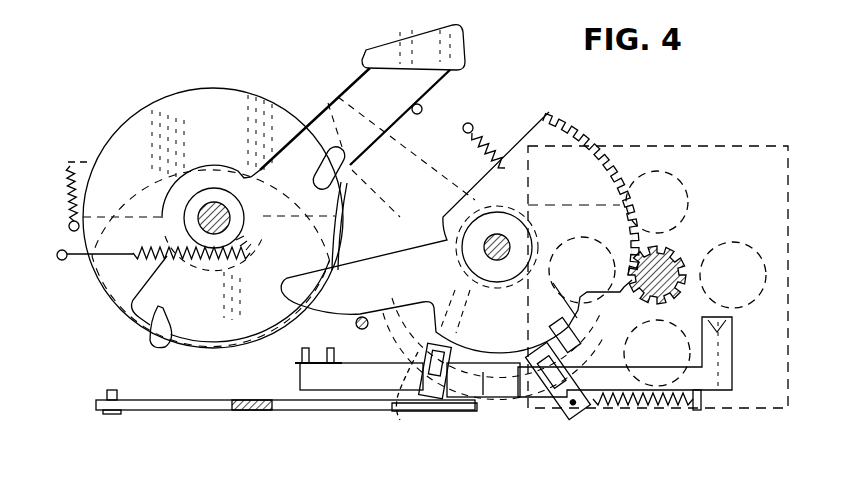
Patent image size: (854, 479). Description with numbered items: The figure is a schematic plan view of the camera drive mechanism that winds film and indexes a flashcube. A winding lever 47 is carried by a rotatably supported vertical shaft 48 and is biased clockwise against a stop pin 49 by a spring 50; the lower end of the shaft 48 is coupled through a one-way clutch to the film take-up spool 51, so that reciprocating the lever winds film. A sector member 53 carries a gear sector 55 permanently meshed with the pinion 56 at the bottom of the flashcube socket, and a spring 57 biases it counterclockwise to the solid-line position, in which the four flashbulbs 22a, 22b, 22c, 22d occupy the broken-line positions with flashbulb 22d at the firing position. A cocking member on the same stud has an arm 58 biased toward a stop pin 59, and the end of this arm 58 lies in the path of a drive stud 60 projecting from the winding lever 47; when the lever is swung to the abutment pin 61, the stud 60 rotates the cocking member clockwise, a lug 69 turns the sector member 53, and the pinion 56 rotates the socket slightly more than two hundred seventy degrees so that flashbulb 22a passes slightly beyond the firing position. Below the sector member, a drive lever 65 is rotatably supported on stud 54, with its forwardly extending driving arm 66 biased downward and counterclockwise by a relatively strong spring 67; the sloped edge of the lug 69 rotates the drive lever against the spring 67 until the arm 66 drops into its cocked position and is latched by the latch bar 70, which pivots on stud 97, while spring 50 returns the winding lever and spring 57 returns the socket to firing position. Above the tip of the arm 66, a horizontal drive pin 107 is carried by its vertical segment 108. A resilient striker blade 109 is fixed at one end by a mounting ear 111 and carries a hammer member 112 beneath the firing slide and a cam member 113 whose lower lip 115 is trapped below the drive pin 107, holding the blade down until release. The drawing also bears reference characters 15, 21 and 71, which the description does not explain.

The push button 15 is at (465, 45).
The indicator housing 21 is at (755, 146).
The flashbulb 22a is at (730, 242).
The indicator window 22b is at (690, 195).
The indicator window 22c is at (578, 240).
The flashbulb 22d is at (676, 358).
The winding lever 47 is at (355, 80).
The vertical shaft 48 is at (260, 203).
The stop pin 49 is at (423, 107).
The spring 50 is at (100, 253).
The film take-up spool 51 is at (110, 282).
The sector member 53 is at (548, 118).
The stud 54 is at (484, 250).
The gear sector 55 is at (617, 155).
The pinion 56 is at (675, 262).
The spring 57 is at (495, 140).
The arm 58 is at (341, 242).
The stop pin 59 is at (356, 323).
The drive stud 60 is at (316, 172).
The abutment pin 61 is at (68, 226).
The drive lever 65 is at (490, 332).
The driving arm 66 is at (436, 402).
The spring 67 is at (650, 405).
The lug 69 is at (580, 300).
The latch bar 70 is at (275, 411).
The bracket 71 is at (733, 335).
The stud 97 is at (110, 415).
The drive pin 107 is at (423, 372).
The vertical segment 108 is at (430, 352).
The striker blade 109 is at (348, 392).
The mounting ear 111 is at (300, 374).
The hammer member 112 is at (720, 400).
The cam member 113 is at (483, 400).
The lower lip 115 is at (410, 380).